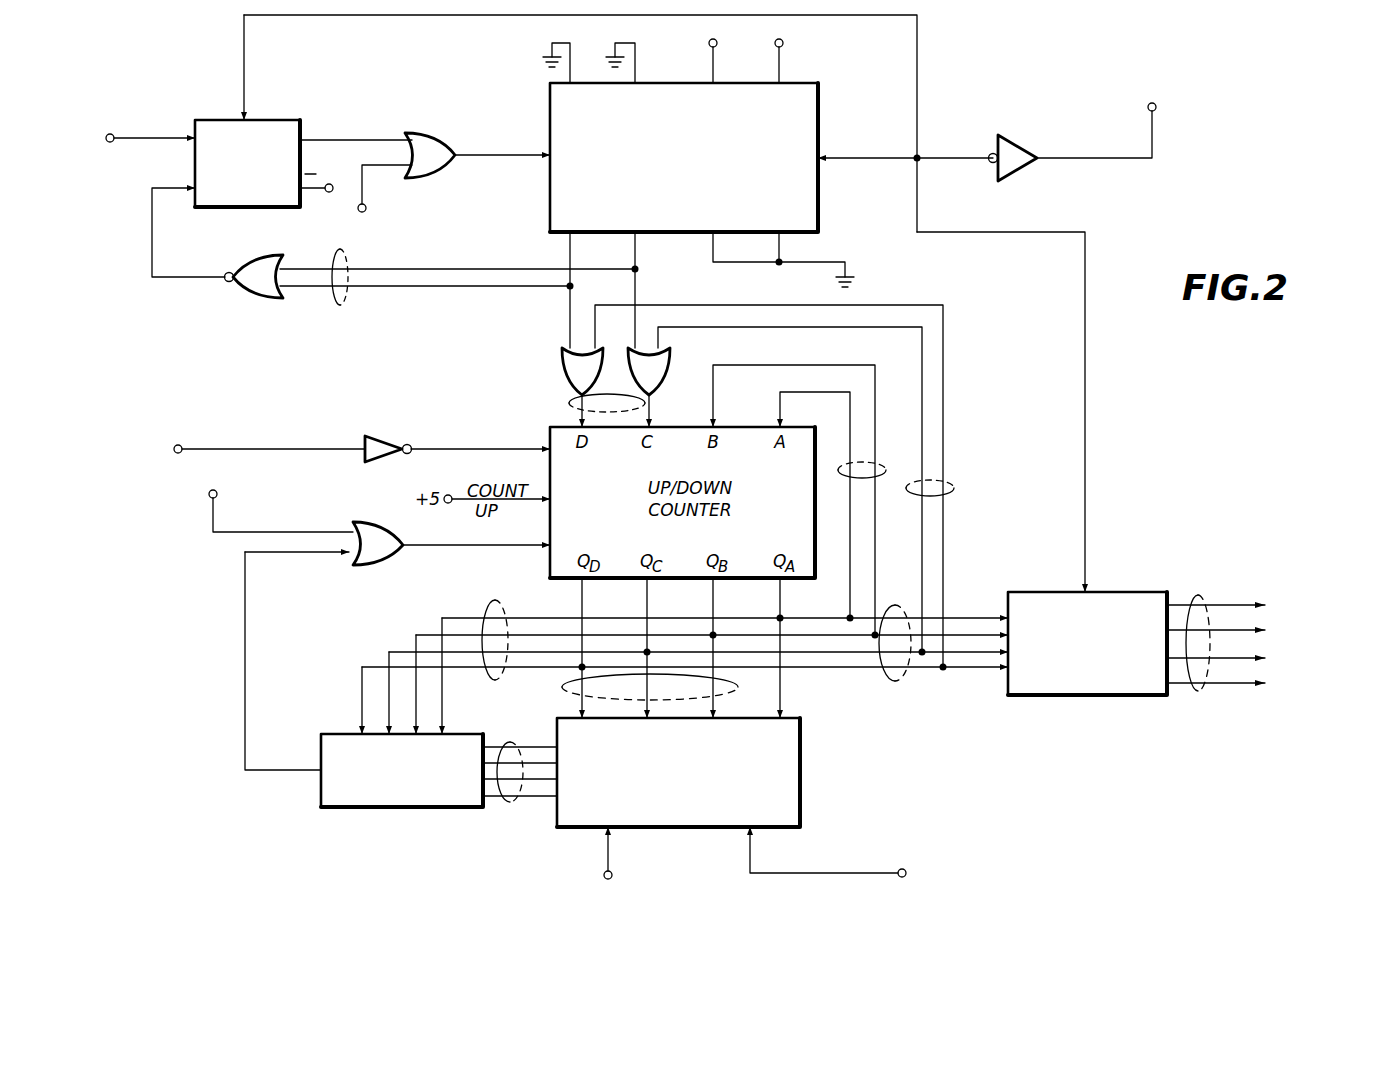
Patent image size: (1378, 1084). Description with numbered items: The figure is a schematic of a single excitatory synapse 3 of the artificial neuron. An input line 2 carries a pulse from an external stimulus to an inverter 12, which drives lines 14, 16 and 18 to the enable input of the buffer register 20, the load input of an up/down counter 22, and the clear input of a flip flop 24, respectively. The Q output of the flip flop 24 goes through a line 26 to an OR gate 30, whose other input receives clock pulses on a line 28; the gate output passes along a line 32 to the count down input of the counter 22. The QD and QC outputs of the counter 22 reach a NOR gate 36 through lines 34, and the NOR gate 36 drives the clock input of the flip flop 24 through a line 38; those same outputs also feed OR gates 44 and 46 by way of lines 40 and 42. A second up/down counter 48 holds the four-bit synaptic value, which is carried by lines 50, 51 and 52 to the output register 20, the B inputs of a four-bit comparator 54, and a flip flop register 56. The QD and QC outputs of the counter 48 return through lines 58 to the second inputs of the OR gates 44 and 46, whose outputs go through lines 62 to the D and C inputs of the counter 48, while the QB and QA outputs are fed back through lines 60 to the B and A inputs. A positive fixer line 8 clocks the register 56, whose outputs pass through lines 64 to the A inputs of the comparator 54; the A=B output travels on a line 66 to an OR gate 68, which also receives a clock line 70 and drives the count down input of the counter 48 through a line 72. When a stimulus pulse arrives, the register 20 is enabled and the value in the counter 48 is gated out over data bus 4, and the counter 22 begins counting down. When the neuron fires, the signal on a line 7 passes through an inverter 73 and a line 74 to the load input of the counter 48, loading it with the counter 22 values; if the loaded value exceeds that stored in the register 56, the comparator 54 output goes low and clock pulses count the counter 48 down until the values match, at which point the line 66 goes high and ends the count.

The input line 2 is at (1105, 160).
The synapse 3 is at (196, 601).
The data bus 4 is at (1199, 692).
The line 7 is at (290, 449).
The positive fixer line 8 is at (815, 875).
The inverter 12 is at (1037, 170).
The line 14 is at (983, 232).
The line 16 is at (880, 170).
The line 18 is at (917, 80).
The buffer register 20 is at (1043, 592).
The up/down counter 22 is at (550, 190).
The flip flop 24 is at (300, 120).
The line 26 is at (378, 140).
The line 28 is at (355, 210).
The OR gate 30 is at (430, 134).
The line 32 is at (487, 155).
The lines 34 is at (346, 298).
The NOR gate 36 is at (262, 298).
The line 38 is at (212, 283).
The line 40 is at (570, 318).
The line 42 is at (640, 292).
The OR gate 44 is at (560, 360).
The OR gate 46 is at (670, 362).
The up/down counter 48 is at (738, 428).
The lines 50 is at (896, 683).
The lines 51 is at (490, 682).
The lines 52 is at (565, 688).
The four-bit comparator 54 is at (360, 808).
The flip flop register 56 is at (800, 778).
The lines 58 is at (958, 490).
The lines 60 is at (886, 468).
The lines 62 is at (578, 405).
The lines 64 is at (514, 803).
The line 66 is at (245, 692).
The OR gate 68 is at (375, 565).
The clock line 70 is at (213, 518).
The line 72 is at (435, 548).
The inverter 73 is at (368, 435).
The line 74 is at (452, 449).